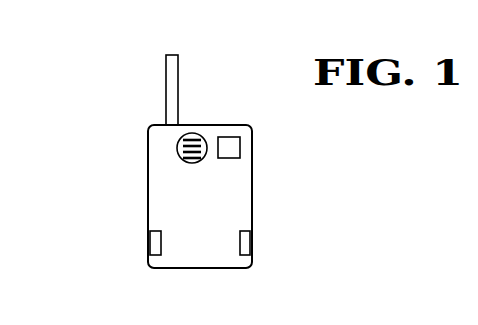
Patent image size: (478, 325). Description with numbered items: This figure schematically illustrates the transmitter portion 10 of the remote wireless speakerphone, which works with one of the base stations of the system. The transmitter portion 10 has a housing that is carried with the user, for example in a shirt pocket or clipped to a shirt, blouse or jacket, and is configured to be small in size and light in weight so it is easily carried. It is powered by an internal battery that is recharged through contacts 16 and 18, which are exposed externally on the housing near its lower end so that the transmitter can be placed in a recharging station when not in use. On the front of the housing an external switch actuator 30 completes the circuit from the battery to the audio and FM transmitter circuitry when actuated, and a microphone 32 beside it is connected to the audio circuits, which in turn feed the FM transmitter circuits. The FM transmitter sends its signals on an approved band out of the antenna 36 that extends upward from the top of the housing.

The transmitter portion 10 is at (252, 195).
The contact 16 is at (150, 243).
The contact 18 is at (252, 245).
The external switch actuator 30 is at (240, 145).
The microphone 32 is at (182, 148).
The antenna 36 is at (166, 88).